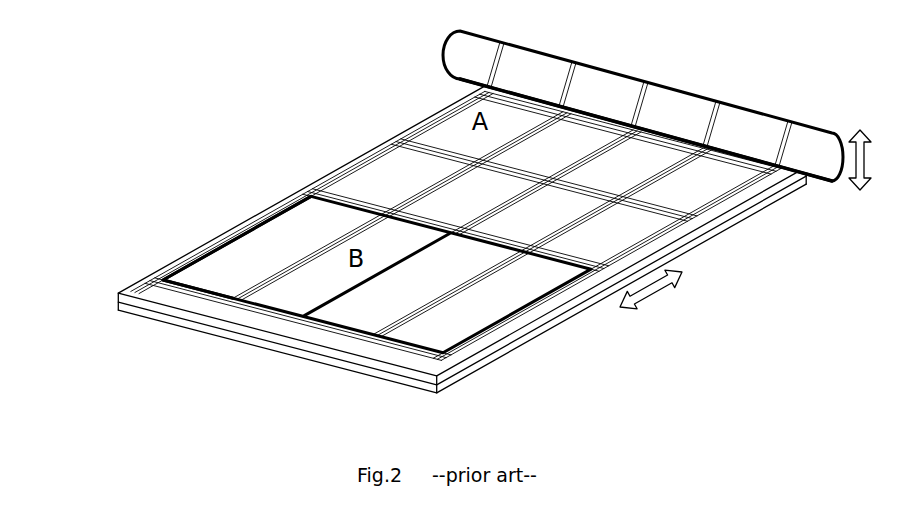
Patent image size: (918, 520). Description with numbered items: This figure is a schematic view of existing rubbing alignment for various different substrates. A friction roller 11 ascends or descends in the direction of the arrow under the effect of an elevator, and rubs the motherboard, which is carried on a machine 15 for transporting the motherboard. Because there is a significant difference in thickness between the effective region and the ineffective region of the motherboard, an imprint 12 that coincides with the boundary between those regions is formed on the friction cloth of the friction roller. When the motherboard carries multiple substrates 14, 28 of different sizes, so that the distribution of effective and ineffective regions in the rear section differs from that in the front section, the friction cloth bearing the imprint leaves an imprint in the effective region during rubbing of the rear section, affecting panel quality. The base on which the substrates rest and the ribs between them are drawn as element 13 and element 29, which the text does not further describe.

The friction roller 11 is at (445, 53).
The imprint 12 is at (472, 74).
The base tray 13 is at (262, 318).
The substrate 14 is at (380, 175).
The machine 15 is at (147, 297).
The substrate 28 is at (235, 265).
The cross rib 29 is at (310, 243).